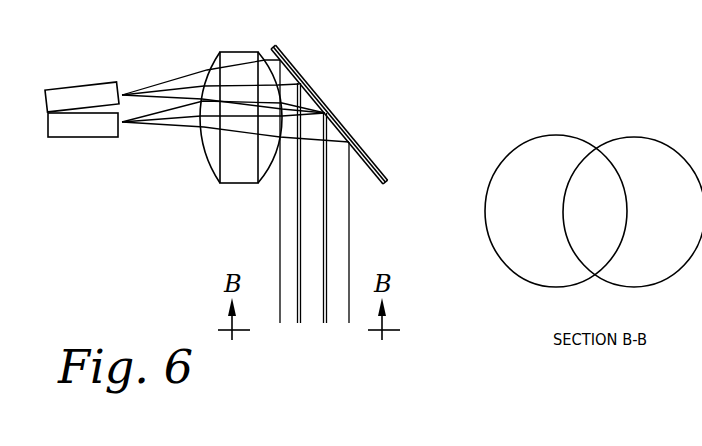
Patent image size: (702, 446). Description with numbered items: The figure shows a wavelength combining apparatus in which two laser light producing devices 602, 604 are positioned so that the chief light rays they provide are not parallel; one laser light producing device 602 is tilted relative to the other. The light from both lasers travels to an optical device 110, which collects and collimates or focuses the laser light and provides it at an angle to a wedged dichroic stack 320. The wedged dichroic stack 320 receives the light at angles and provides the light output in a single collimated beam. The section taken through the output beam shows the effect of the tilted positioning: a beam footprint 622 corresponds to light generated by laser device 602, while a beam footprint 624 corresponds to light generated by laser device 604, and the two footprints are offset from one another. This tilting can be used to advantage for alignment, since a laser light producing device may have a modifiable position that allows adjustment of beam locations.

The laser light producing device 602 is at (67, 87).
The laser light producing device 604 is at (57, 138).
The optical device 110 is at (230, 184).
The wedged dichroic stack 320 is at (292, 66).
The beam footprint 622 is at (526, 144).
The beam footprint 624 is at (637, 138).